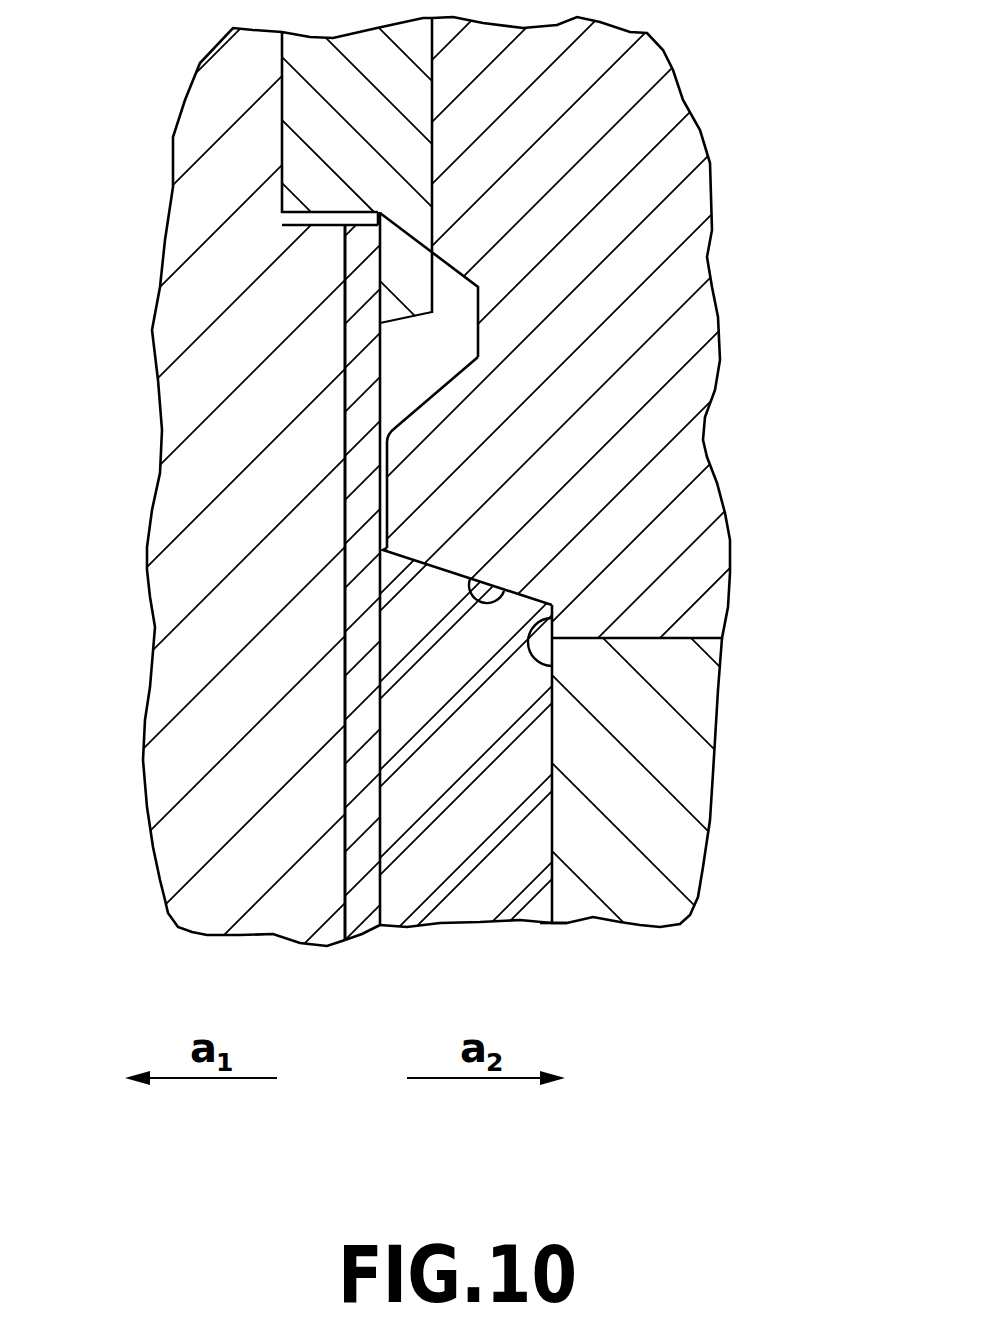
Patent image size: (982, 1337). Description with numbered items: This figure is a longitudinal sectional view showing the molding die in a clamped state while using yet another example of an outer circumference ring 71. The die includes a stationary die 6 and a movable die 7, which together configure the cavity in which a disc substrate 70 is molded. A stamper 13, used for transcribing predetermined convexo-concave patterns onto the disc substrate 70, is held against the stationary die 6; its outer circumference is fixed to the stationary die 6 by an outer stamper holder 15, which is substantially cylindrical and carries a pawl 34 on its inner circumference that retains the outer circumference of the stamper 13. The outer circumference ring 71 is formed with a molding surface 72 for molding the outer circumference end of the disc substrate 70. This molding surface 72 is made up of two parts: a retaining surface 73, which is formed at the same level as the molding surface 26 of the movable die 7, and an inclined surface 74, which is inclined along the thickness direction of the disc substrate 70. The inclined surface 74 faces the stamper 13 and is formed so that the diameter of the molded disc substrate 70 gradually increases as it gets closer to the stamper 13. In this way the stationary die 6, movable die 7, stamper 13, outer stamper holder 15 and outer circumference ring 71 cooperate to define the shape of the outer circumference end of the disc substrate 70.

The stationary die 6 is at (192, 890).
The movable die 7 is at (673, 763).
The stamper 13 is at (362, 918).
The outer stamper holder 15 is at (323, 120).
The molding surface 26 is at (548, 912).
The pawl 34 is at (432, 312).
The disc substrate 70 is at (475, 887).
The outer circumference ring 71 is at (687, 323).
The molding surface 72 is at (457, 650).
The retaining surface 73 is at (552, 668).
The inclined surface 74 is at (507, 587).